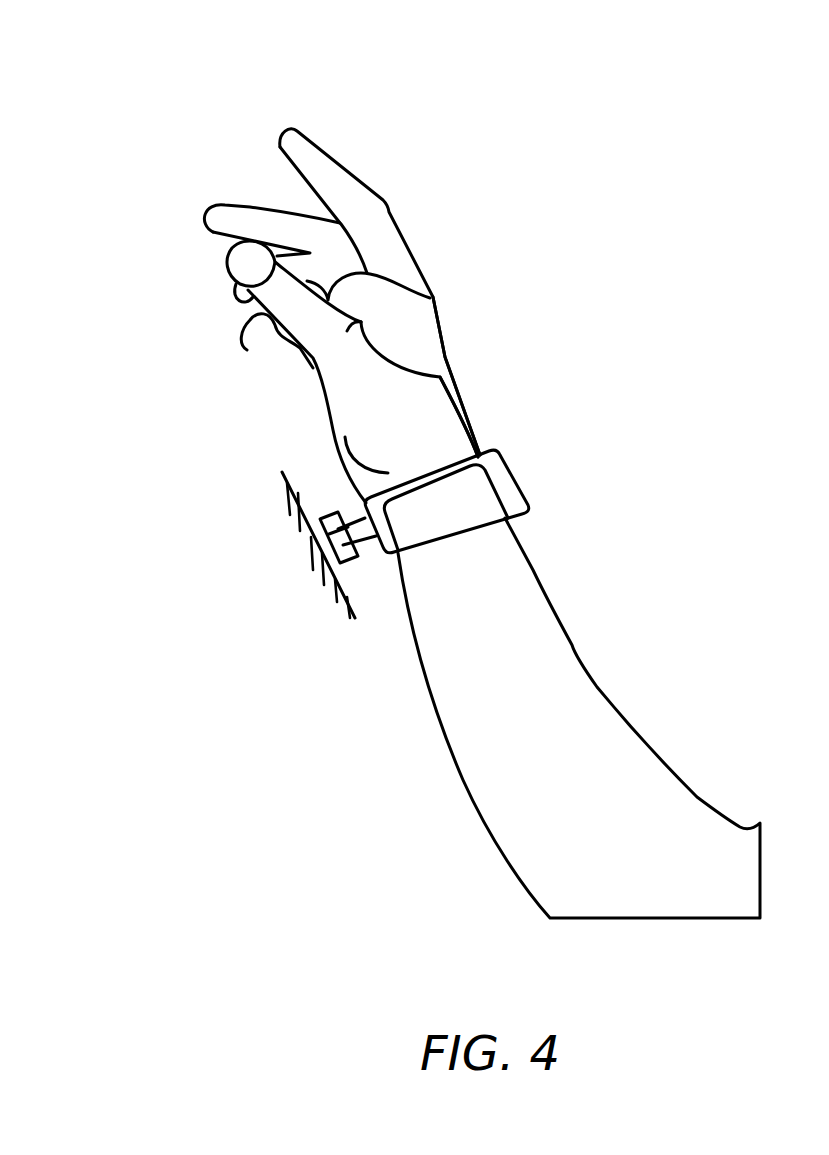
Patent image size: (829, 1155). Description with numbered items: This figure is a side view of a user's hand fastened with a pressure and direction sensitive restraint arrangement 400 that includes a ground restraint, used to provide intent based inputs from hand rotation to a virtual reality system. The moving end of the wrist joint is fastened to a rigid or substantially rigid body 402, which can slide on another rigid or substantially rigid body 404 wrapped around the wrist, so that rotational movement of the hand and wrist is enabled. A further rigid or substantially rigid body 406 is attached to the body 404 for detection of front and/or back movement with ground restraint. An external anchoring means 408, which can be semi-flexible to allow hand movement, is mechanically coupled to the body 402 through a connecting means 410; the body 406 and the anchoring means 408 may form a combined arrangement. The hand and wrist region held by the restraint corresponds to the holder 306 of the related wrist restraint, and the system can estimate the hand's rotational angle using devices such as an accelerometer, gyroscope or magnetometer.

The wearable device worn on a user's wrist 400 is at (182, 76).
The holder 306 is at (455, 423).
The rigid or substantially rigid body 402 is at (513, 482).
The rigid or substantially rigid body 404 is at (470, 463).
The rigid or substantially rigid body 406 is at (316, 522).
The external anchoring means 408 is at (307, 588).
The connecting means 410 is at (347, 539).